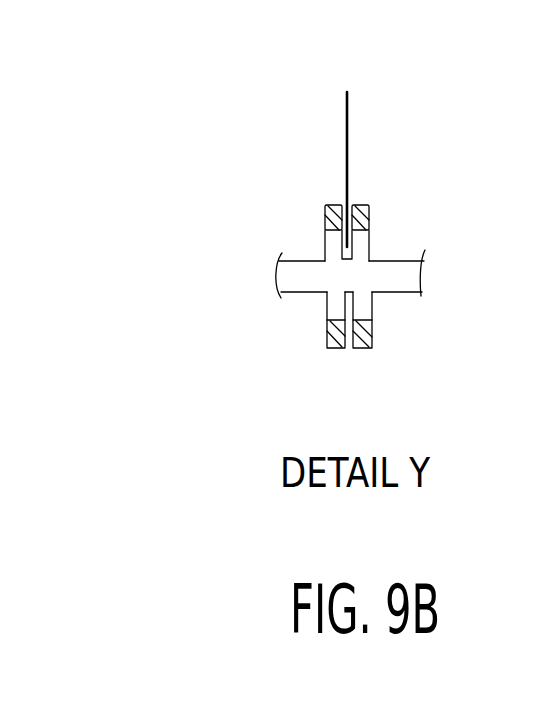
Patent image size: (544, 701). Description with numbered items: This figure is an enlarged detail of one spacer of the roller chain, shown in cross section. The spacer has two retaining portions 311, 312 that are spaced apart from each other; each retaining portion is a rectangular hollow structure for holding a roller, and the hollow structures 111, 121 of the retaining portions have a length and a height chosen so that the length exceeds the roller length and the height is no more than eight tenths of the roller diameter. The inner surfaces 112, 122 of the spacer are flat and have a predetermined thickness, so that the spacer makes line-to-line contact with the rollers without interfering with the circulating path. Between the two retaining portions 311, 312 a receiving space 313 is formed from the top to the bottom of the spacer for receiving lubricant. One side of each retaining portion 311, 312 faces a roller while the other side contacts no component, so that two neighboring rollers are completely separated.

The hollow structure 111 is at (324, 207).
The hollow structure 121 is at (369, 215).
The inner surface 112 is at (330, 295).
The inner surface 122 is at (371, 295).
The retaining portion 311 is at (331, 205).
The retaining portion 312 is at (364, 205).
The receiving space 313 is at (347, 143).